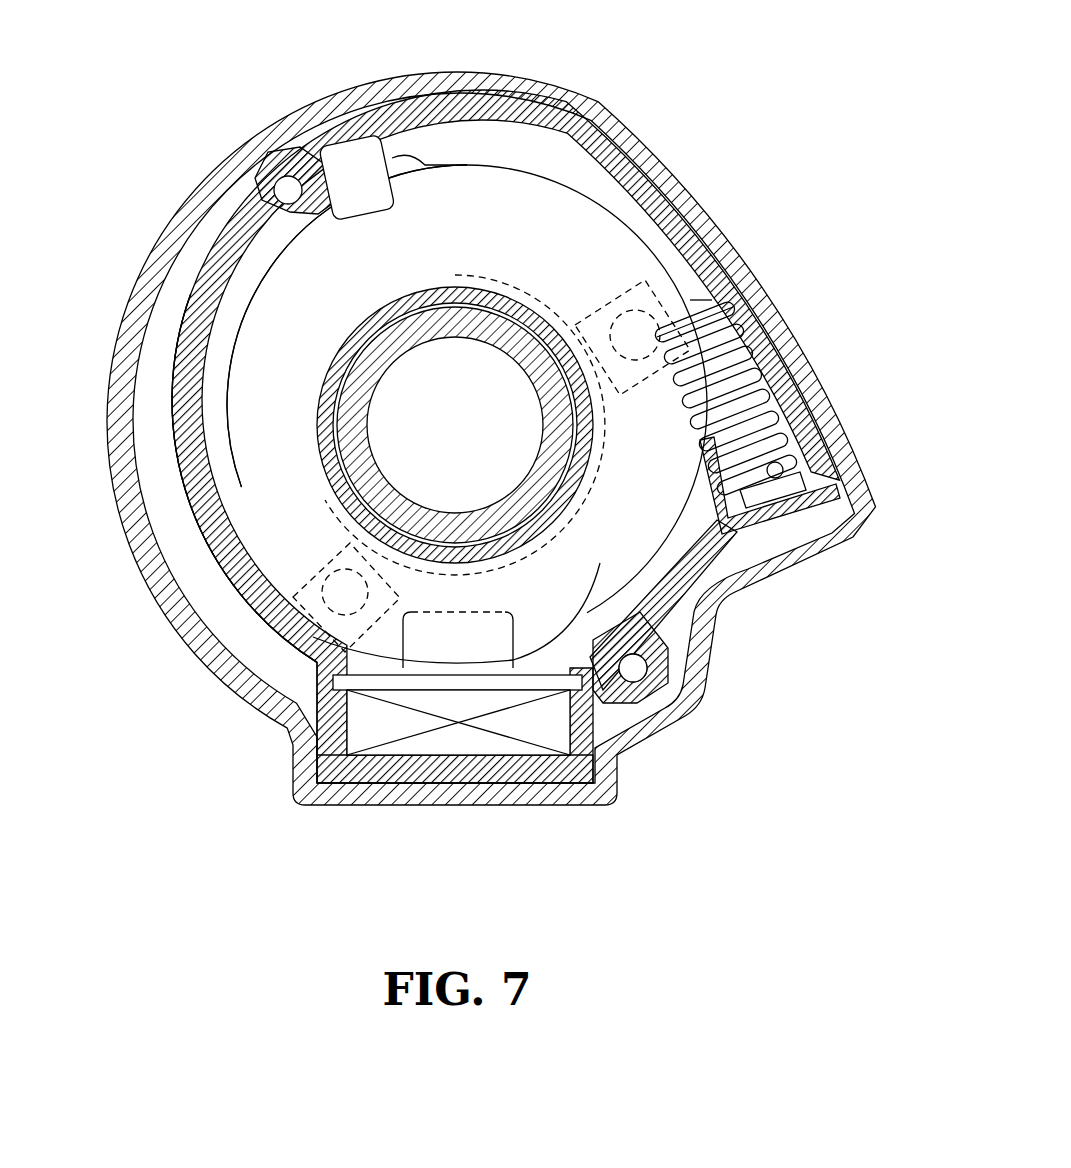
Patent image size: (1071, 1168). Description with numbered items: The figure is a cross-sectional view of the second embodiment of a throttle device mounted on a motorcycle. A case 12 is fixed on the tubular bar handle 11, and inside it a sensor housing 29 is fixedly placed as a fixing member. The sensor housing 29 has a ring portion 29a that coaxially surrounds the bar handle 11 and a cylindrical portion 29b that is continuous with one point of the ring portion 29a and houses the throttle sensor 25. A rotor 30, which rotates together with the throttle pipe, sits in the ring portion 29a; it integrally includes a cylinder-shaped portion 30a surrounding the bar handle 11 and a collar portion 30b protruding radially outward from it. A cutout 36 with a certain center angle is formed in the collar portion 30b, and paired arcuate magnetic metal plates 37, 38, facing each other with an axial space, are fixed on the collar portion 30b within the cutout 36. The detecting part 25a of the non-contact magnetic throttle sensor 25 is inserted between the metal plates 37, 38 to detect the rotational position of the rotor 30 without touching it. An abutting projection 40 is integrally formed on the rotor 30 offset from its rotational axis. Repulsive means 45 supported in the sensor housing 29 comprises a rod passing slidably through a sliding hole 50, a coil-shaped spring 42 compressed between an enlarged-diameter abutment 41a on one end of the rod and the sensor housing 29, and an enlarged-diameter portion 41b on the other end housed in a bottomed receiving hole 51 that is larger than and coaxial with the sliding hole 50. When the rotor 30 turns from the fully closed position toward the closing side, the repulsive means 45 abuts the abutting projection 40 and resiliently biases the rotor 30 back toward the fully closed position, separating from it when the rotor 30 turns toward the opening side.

The bar handle 11 is at (345, 432).
The case 12 is at (480, 82).
The throttle sensor 25 is at (625, 762).
The detecting part 25a is at (473, 612).
The sensor housing 29 is at (213, 583).
The ring portion 29a is at (180, 497).
The cylindrical portion 29b is at (383, 773).
The rotor 30 is at (563, 183).
The cylinder-shaped portion 30a is at (458, 287).
The collar portion 30b is at (223, 417).
The cutout 36 is at (587, 597).
The magnetic metal plate 37 is at (700, 660).
The magnetic metal plate 38 is at (700, 660).
The abutting projection 40 is at (340, 150).
The enlarged-diameter abutment 41a is at (730, 268).
The enlarged-diameter portion 41b is at (805, 492).
The coil-shaped spring 42 is at (755, 380).
The repulsive means 45 is at (700, 305).
The sliding hole 50 is at (800, 453).
The receiving hole 51 is at (795, 455).